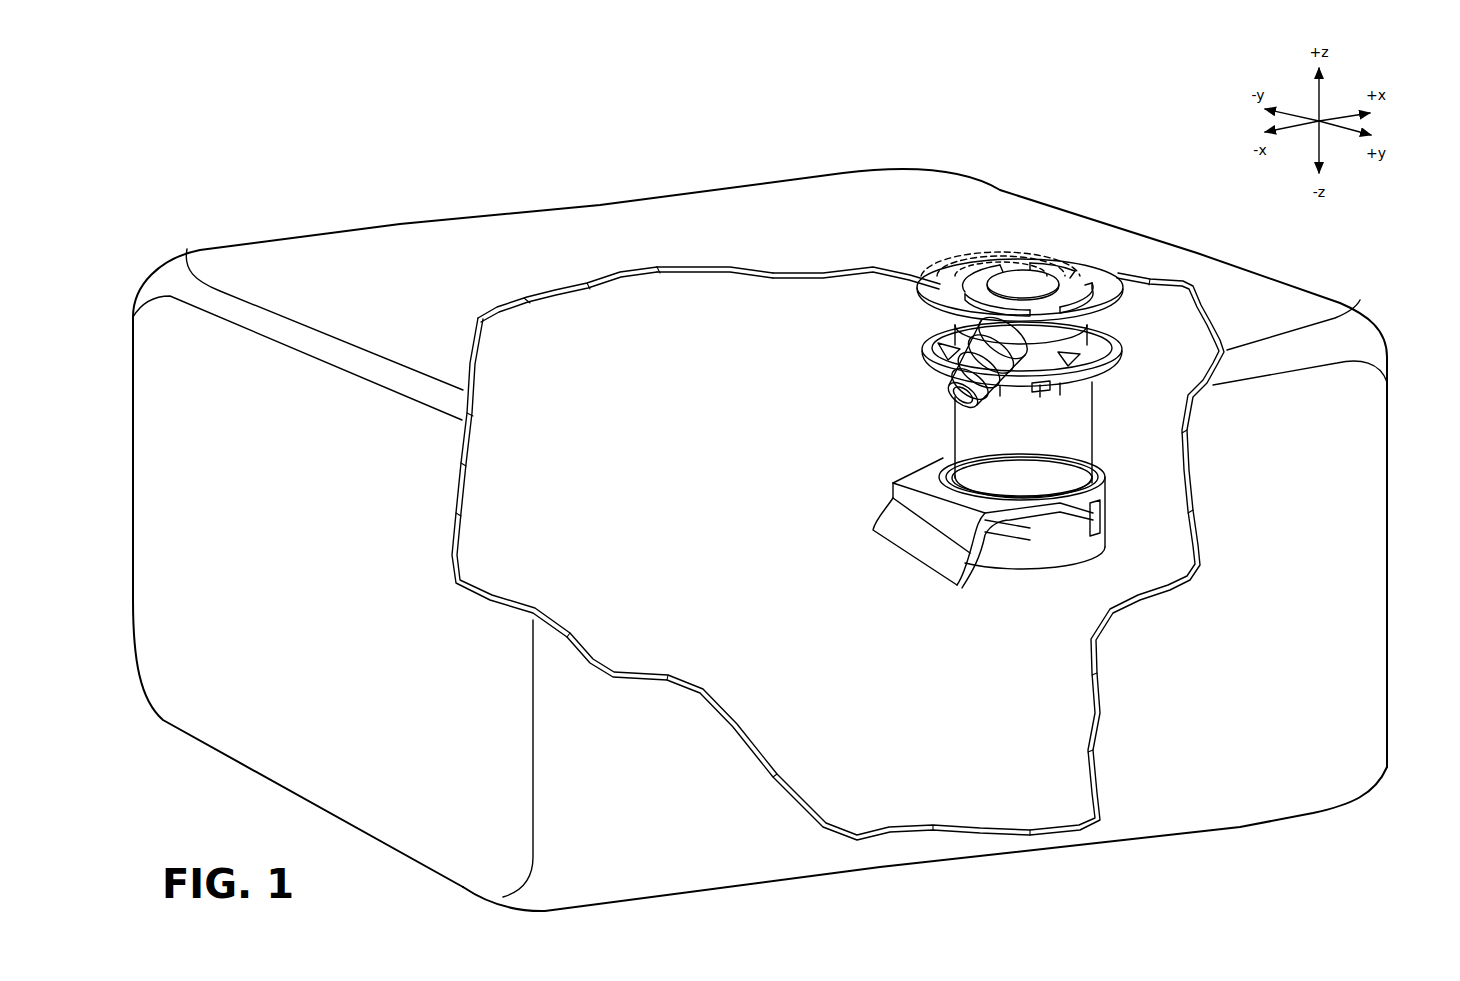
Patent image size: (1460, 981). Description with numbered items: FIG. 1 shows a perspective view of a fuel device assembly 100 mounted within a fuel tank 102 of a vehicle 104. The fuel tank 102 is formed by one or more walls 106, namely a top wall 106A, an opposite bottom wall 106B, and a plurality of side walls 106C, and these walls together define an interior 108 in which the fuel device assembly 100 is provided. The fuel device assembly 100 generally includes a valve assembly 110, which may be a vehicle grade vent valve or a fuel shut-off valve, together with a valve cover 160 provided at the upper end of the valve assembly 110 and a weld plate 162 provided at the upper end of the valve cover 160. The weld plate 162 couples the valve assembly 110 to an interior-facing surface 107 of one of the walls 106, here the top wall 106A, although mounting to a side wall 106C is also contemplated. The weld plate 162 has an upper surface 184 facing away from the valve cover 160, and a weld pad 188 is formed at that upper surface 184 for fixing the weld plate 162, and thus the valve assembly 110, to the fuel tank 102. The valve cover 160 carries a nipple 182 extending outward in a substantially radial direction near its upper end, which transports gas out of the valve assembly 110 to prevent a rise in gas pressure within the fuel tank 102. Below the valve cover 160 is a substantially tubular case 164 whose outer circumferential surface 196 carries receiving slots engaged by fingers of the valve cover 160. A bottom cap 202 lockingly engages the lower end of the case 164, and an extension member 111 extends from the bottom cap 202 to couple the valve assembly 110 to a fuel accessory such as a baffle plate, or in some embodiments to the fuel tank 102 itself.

The fuel device assembly 100 is at (979, 389).
The fuel tank 102 is at (760, 475).
The vehicle 104 is at (760, 475).
The walls 106 is at (760, 506).
The top wall 106A is at (843, 207).
The bottom wall 106B is at (1240, 827).
The side walls 106C is at (160, 472).
The interior-facing surface 107 is at (706, 270).
The interior 108 is at (838, 526).
The valve assembly 110 is at (1030, 300).
The extension member 111 is at (920, 540).
The valve cover 160 is at (1130, 325).
The weld plate 162 is at (1136, 286).
The case 164 is at (1064, 439).
The nipple 182 is at (943, 411).
The upper surface 184 is at (1080, 263).
The weld pad 188 is at (1040, 263).
The outer circumferential surface 196 is at (1073, 446).
The bottom cap 202 is at (1114, 524).